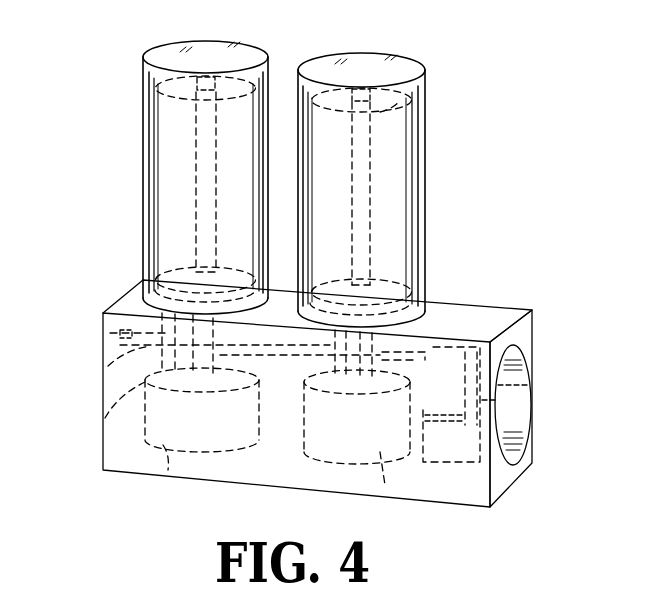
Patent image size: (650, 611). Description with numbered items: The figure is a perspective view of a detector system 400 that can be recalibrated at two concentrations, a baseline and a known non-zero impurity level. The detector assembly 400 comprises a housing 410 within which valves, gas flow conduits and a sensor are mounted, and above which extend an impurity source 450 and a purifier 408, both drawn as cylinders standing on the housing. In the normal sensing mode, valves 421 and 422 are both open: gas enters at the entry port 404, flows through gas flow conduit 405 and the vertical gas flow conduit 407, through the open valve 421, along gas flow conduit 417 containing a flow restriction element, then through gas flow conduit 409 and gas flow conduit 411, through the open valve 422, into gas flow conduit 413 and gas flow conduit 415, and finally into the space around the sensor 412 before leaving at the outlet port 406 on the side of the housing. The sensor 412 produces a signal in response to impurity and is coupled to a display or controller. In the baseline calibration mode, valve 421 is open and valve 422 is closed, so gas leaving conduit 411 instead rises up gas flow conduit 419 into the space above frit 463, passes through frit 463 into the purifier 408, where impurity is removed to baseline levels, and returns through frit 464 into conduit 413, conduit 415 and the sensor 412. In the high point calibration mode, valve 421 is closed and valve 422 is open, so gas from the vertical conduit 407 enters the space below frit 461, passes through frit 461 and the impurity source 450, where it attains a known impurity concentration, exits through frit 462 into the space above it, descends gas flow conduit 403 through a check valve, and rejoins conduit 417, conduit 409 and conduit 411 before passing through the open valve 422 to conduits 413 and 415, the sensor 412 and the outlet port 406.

The detector system 400 is at (557, 127).
The gas flow conduit 403 is at (272, 100).
The entry port 404 is at (103, 335).
The gas flow conduit 405 is at (106, 367).
The outlet port 406 is at (522, 415).
The vertical gas flow conduit 407 is at (105, 418).
The purifier 408 is at (426, 170).
The gas flow conduit 409 is at (317, 408).
The housing 410 is at (485, 300).
The gas flow conduit 411 is at (357, 397).
The sensor 412 is at (520, 392).
The gas flow conduit 413 is at (451, 404).
The gas flow conduit 415 is at (432, 344).
The gas flow conduit 417 is at (202, 382).
The gas flow conduit 419 is at (430, 116).
The valve 421 is at (163, 447).
The valve 422 is at (383, 486).
The impurity source 450 is at (143, 190).
The frit 461 is at (148, 270).
The frit 462 is at (147, 70).
The frit 463 is at (425, 92).
The frit 464 is at (400, 298).